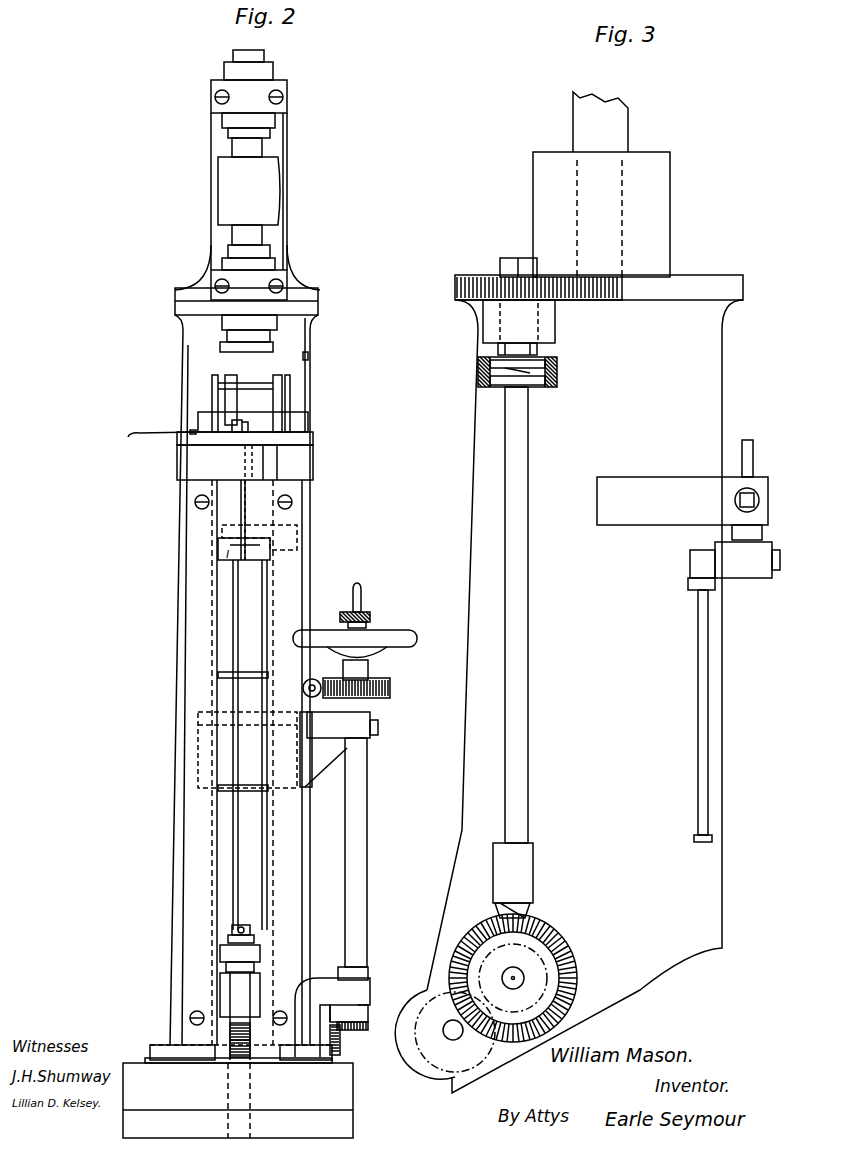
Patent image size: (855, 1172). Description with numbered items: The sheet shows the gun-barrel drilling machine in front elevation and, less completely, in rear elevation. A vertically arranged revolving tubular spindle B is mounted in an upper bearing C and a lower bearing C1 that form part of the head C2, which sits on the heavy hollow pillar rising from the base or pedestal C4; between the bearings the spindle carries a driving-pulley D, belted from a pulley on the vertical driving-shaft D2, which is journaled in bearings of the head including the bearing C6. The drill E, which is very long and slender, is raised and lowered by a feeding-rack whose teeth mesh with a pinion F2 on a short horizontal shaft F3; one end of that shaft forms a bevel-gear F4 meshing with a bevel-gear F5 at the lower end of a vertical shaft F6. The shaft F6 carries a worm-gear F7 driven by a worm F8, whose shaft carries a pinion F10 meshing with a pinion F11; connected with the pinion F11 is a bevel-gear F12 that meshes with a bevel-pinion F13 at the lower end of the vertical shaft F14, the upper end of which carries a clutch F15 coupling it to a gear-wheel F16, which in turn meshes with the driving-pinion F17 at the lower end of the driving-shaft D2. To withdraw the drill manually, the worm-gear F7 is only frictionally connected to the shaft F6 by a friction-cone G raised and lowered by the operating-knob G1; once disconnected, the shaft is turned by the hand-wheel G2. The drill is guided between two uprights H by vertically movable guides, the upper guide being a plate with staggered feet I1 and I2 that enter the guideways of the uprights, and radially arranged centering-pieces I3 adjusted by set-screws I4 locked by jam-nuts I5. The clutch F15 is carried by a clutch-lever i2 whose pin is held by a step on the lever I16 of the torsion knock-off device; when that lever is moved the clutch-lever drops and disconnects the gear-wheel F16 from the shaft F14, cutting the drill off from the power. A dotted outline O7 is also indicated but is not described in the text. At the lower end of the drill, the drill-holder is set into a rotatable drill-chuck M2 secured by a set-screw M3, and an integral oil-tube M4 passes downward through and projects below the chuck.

In FIG. 2, the tubular spindle B is at (233, 57).
In FIG. 2, the upper bearing C is at (249, 96).
In FIG. 2, the lower bearing C1 is at (249, 285).
In FIG. 2, the head C2 is at (288, 216).
In FIG. 2, the base or pedestal C4 is at (238, 1091).
In FIG. 3, the bearing C6 is at (601, 214).
In FIG. 2, the driving-pulley D is at (249, 191).
In FIG. 3, the driving-shaft D2 is at (600, 122).
In FIG. 2, the drill E is at (240, 497).
In FIG. 2, the uprights H is at (241, 762).
In FIG. 2, the foot I1 is at (243, 745).
In FIG. 2, the foot I2 is at (247, 751).
In FIG. 2, the centering-pieces I3 is at (178, 446).
In FIG. 2, the set-screws I4 is at (243, 420).
In FIG. 2, the jam-nuts I5 is at (144, 434).
In FIG. 2, the lever I16 is at (307, 342).
In FIG. 2, the clutch-lever i2 is at (308, 357).
In FIG. 3, the clutch-lever i2 is at (557, 375).
In FIG. 2, the slide block O7 is at (297, 548).
In FIG. 2, the friction-cone G is at (373, 672).
In FIG. 2, the operating-knob G1 is at (363, 610).
In FIG. 2, the hand-wheel G2 is at (314, 636).
In FIG. 2, the pinion F2 is at (240, 1016).
In FIG. 2, the short horizontal shaft F3 is at (226, 1048).
In FIG. 2, the bevel-gear F4 is at (340, 1048).
In FIG. 2, the bevel-gear F5 is at (368, 1026).
In FIG. 2, the vertical shaft F6 is at (357, 800).
In FIG. 2, the worm-gear F7 is at (390, 688).
In FIG. 2, the worm F8 is at (315, 681).
In FIG. 3, the pinion F10 is at (445, 1003).
In FIG. 3, the pinion F11 is at (567, 962).
In FIG. 3, the bevel-gear F12 is at (558, 940).
In FIG. 3, the bevel-pinion F13 is at (533, 912).
In FIG. 3, the vertically-arranged shaft F14 is at (520, 505).
In FIG. 3, the clutch F15 is at (537, 350).
In FIG. 3, the gear-wheel F16 is at (455, 290).
In FIG. 3, the driving-pinion F17 is at (622, 289).
In FIG. 2, the drill-chuck M2 is at (232, 930).
In FIG. 2, the set-screw M3 is at (250, 930).
In FIG. 2, the oil-tube M4 is at (240, 958).